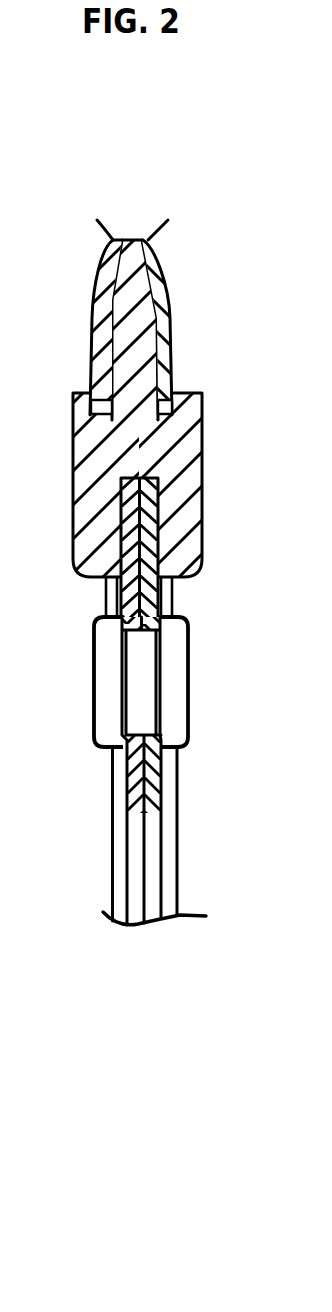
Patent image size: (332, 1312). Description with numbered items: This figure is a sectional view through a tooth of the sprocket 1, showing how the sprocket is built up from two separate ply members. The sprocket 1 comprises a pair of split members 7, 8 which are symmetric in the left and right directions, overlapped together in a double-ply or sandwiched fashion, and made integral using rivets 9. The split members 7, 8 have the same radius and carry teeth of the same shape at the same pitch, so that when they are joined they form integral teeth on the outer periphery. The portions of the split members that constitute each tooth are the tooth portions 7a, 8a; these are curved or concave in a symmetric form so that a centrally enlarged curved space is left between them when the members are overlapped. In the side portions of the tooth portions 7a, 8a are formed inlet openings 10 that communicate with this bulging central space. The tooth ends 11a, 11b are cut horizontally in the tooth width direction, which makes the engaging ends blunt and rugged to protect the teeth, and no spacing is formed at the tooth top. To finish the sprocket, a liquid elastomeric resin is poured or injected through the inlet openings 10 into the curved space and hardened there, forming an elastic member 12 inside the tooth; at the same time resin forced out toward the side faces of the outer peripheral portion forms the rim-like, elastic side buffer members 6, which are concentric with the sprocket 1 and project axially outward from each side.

The sprocket 1 is at (174, 556).
The side buffer member 6 is at (90, 514).
The split member 7 is at (125, 787).
The tooth portion 7a is at (97, 323).
The split member 8 is at (157, 787).
The tooth portion 8a is at (173, 322).
The rivet 9 is at (183, 683).
The inlet opening 10 is at (105, 412).
The tooth end 11a is at (87, 215).
The tooth end 11b is at (176, 214).
The elastic member 12 is at (120, 367).